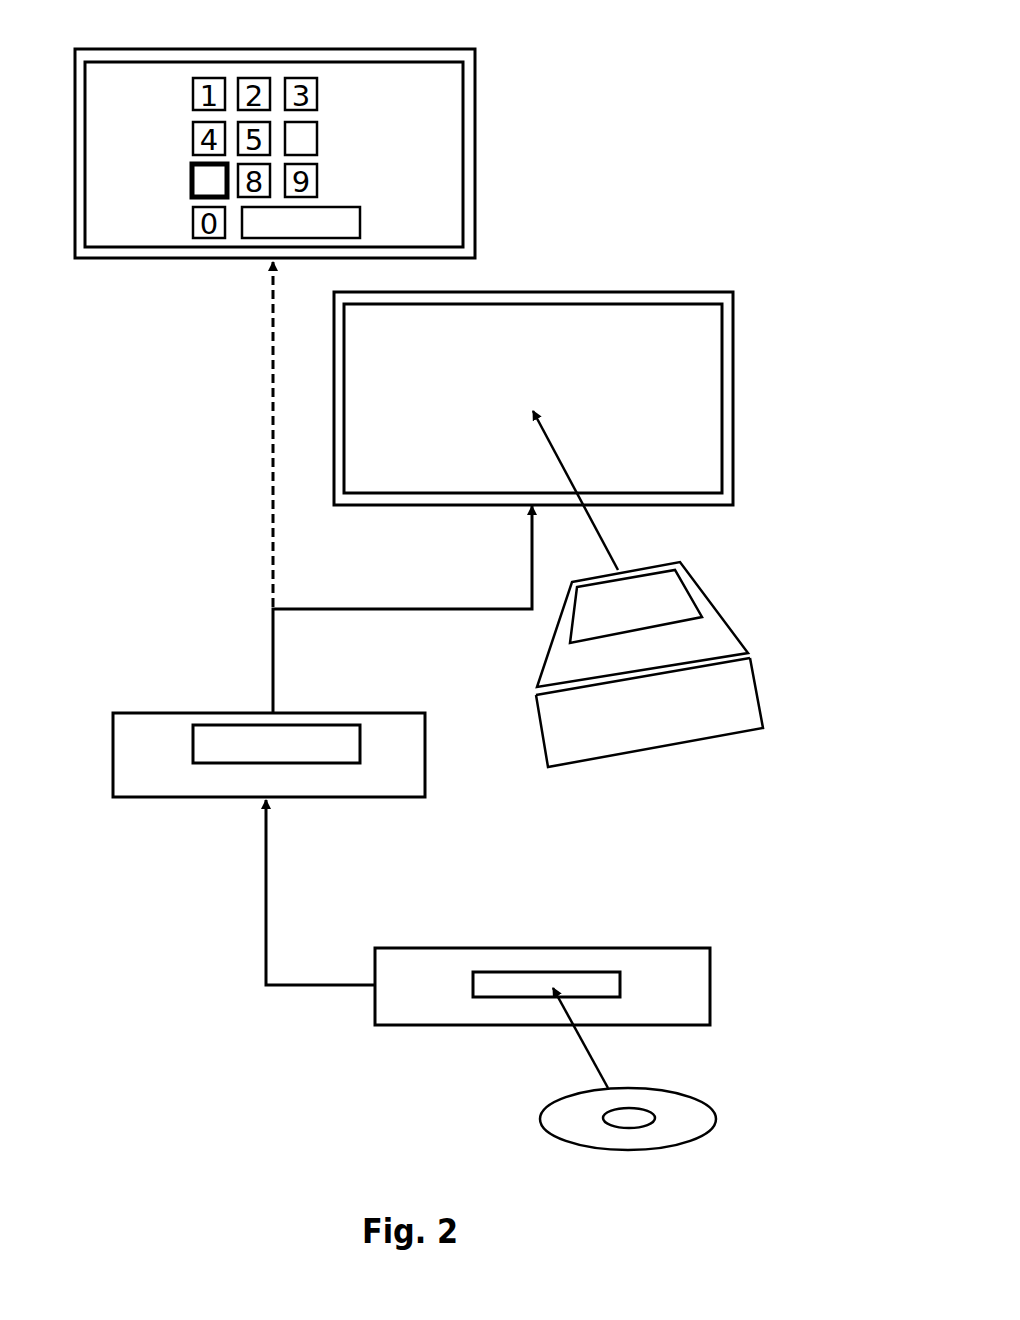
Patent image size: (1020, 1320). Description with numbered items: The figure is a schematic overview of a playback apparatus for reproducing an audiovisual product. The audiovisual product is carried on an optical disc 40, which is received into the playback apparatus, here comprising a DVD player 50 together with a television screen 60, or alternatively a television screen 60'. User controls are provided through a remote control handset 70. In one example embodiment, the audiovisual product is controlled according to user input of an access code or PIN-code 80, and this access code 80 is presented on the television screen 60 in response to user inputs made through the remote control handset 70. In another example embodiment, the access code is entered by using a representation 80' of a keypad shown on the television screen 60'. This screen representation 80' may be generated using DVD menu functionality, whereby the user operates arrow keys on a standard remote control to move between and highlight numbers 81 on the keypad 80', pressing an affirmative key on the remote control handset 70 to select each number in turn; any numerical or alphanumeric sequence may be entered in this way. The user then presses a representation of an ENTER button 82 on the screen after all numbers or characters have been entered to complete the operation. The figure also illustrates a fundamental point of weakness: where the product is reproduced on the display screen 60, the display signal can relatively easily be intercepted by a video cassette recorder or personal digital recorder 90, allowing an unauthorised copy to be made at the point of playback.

The optical disc 40 is at (665, 1138).
The DVD player 50 is at (663, 955).
The television screen 60 is at (565, 398).
The television screen 60' is at (310, 153).
The remote control handset 70 is at (727, 633).
The access code 80 is at (568, 327).
The representation of a keypad 80' is at (355, 78).
The numbers 81 is at (192, 197).
The ENTER button 82 is at (243, 232).
The personal digital recorder 90 is at (388, 763).